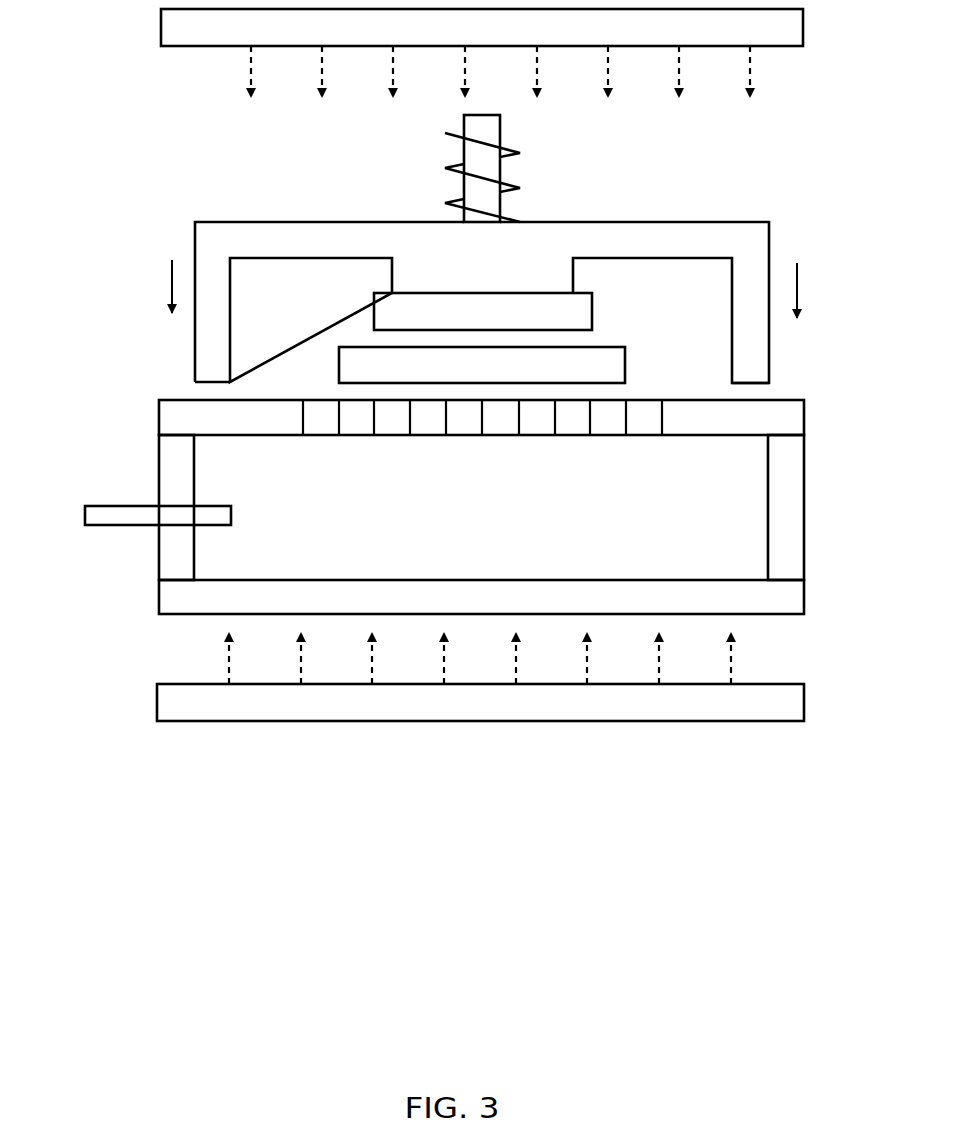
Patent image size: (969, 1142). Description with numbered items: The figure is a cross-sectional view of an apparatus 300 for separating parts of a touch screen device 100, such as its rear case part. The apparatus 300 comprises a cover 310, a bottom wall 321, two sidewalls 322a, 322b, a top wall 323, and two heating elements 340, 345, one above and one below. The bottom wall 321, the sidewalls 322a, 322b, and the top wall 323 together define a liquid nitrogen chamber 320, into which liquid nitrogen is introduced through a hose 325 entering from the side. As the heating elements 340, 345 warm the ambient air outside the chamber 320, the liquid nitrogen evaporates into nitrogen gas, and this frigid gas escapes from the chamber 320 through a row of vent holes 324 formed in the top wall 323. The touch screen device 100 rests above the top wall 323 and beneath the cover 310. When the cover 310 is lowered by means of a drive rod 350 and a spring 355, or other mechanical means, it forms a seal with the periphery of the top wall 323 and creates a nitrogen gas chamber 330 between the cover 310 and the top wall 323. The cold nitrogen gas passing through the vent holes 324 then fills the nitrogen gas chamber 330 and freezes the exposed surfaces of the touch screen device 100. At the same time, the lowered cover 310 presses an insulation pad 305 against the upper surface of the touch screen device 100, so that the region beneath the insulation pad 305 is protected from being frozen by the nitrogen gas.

The touch screen device 100 is at (482, 365).
The apparatus 300 is at (208, 830).
The insulation pad 305 is at (483, 311).
The cover 310 is at (484, 302).
The liquid nitrogen chamber 320 is at (481, 522).
The bottom wall 321 is at (757, 615).
The sidewall 322a is at (159, 485).
The sidewall 322b is at (805, 545).
The top wall 323 is at (159, 412).
The vent holes 324 is at (372, 430).
The hose 325 is at (121, 527).
The nitrogen gas chamber 330 is at (481, 302).
The heating element 340 is at (203, 46).
The heating element 345 is at (300, 722).
The drive rod 350 is at (460, 191).
The spring 355 is at (517, 188).